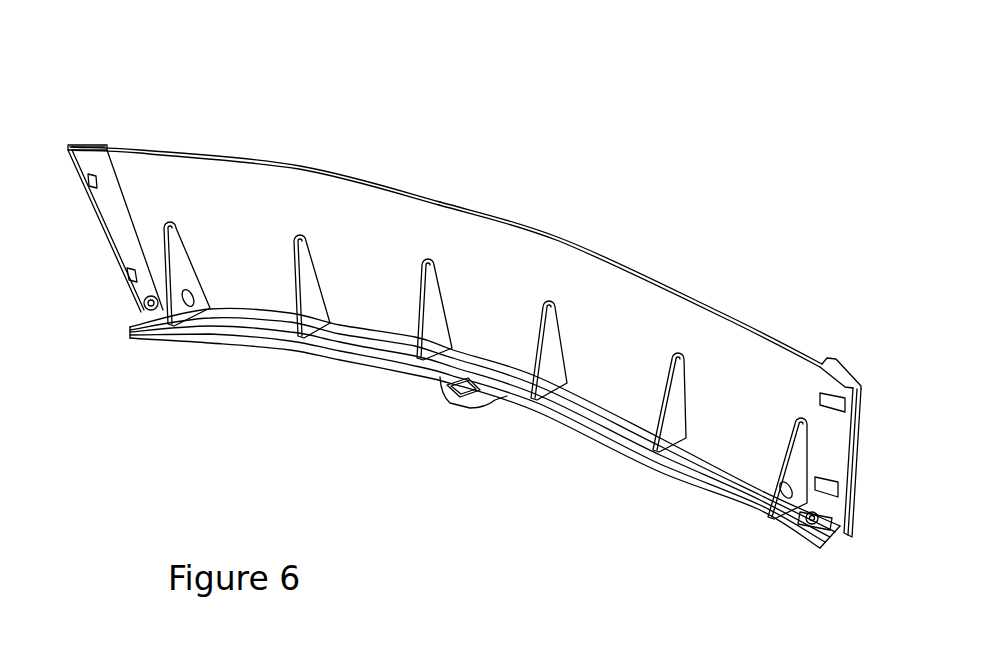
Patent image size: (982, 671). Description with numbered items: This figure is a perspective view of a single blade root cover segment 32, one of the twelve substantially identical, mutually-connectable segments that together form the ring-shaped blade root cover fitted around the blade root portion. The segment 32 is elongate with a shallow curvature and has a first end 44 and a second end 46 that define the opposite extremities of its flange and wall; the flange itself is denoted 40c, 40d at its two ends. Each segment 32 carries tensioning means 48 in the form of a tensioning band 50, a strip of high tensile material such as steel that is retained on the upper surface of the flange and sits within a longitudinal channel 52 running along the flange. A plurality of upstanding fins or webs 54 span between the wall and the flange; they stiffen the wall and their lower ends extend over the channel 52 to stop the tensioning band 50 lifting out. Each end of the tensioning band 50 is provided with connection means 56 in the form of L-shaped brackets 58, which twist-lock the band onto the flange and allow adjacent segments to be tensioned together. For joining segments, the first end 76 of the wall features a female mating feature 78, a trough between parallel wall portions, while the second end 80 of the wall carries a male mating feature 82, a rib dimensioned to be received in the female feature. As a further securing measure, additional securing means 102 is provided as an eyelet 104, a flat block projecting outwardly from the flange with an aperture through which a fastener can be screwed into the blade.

The blade root cover segment 32 is at (699, 213).
The first end 44 is at (64, 151).
The second end 46 is at (872, 393).
The tensioning means 48 is at (691, 486).
The tensioning band 50 is at (587, 410).
The longitudinal channel 52 is at (368, 337).
The upstanding fins or webs 54 is at (548, 310).
The connection means 56 is at (150, 353).
The bracket 58 is at (143, 305).
The first end of the wall 76 is at (147, 139).
The female mating feature 78 is at (852, 354).
The second end of the wall 80 is at (792, 347).
The male mating feature 82 is at (93, 140).
The additional securing means 102 is at (480, 423).
The eyelet 104 is at (447, 400).
The first beam end 40c is at (117, 330).
The second beam end 40d is at (830, 555).